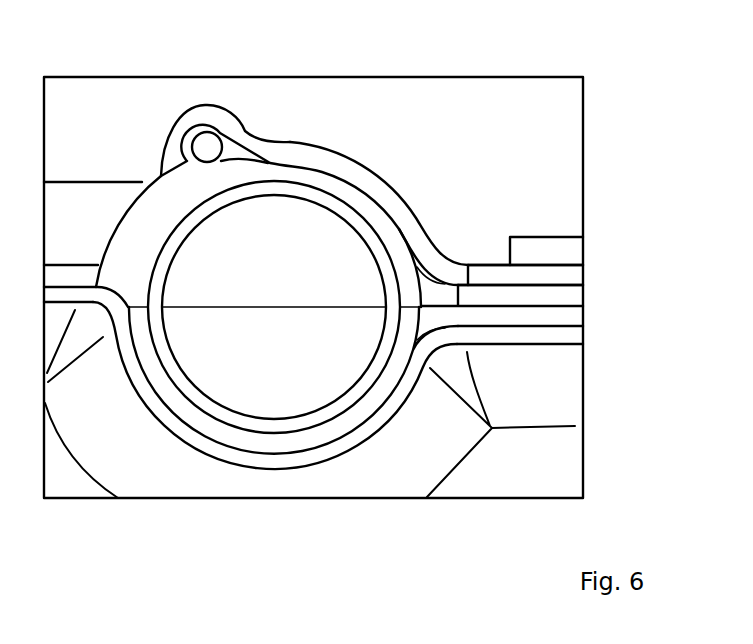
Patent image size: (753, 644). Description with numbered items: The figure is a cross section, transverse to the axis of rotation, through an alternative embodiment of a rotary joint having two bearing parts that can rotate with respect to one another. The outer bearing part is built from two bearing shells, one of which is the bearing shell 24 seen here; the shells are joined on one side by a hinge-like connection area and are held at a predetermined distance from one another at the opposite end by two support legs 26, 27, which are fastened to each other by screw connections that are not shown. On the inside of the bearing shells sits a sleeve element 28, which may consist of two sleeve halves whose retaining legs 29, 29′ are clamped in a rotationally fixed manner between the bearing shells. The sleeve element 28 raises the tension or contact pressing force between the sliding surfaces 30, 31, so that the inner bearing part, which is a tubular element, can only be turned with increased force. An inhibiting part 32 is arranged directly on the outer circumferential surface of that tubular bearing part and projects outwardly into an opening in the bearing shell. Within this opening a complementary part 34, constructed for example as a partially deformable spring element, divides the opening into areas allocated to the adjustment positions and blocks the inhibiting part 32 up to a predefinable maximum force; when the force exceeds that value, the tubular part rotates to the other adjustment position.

The bearing shell 24 is at (372, 425).
The support leg 26 is at (567, 277).
The support leg 27 is at (568, 335).
The sleeve element 28 is at (333, 185).
The retaining leg 29 is at (567, 297).
The retaining leg 29′ is at (570, 315).
The sliding surface 30 is at (344, 212).
The sliding surface 31 is at (384, 237).
The inhibiting part 32 is at (153, 213).
The complementary part 34 is at (209, 146).